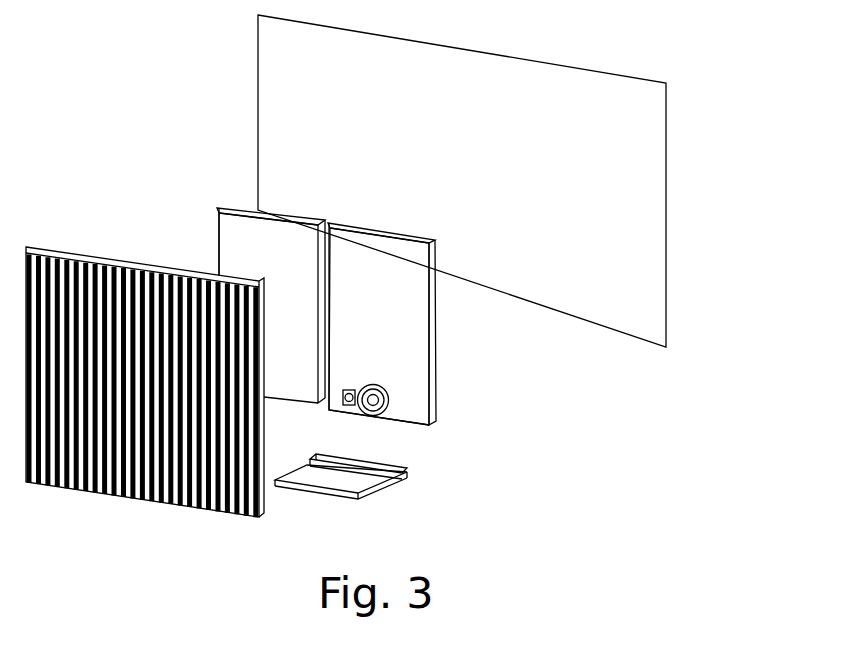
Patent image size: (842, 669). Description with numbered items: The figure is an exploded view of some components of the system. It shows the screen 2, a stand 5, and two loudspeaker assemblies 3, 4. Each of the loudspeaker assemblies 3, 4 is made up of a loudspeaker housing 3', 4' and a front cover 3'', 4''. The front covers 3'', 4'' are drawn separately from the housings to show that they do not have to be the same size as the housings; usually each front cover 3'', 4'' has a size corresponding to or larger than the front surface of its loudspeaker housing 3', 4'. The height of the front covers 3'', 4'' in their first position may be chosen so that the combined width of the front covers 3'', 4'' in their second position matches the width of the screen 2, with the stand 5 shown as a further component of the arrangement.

The screen 2 is at (666, 157).
The loudspeaker assembly 3 is at (430, 329).
The loudspeaker housing 3' is at (434, 326).
The front cover 3'' is at (142, 411).
The loudspeaker assembly 4 is at (231, 278).
The loudspeaker housing 4' is at (227, 240).
The front cover 4'' is at (145, 407).
The stand 5 is at (378, 487).